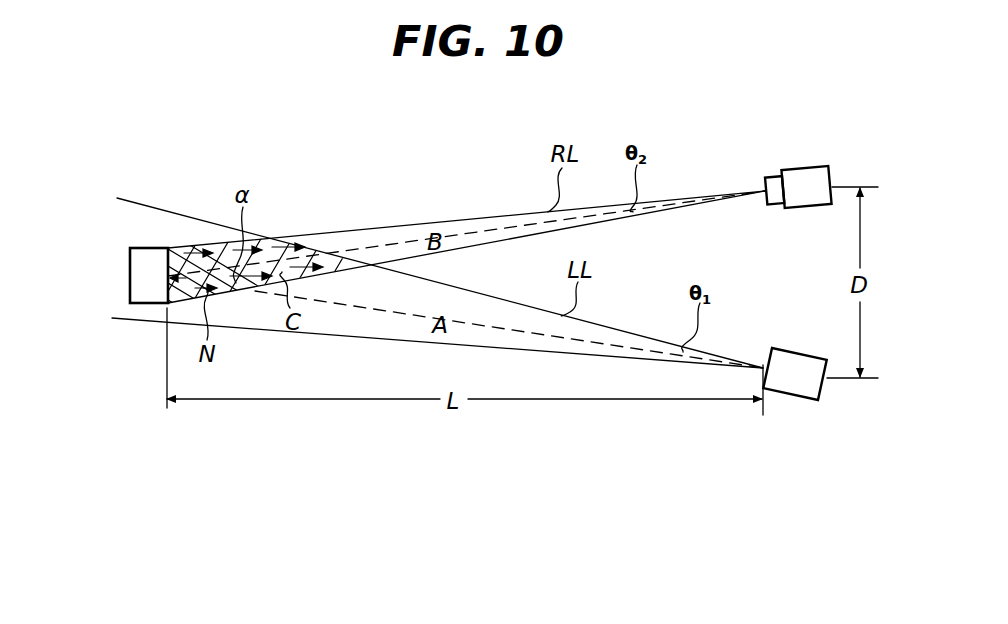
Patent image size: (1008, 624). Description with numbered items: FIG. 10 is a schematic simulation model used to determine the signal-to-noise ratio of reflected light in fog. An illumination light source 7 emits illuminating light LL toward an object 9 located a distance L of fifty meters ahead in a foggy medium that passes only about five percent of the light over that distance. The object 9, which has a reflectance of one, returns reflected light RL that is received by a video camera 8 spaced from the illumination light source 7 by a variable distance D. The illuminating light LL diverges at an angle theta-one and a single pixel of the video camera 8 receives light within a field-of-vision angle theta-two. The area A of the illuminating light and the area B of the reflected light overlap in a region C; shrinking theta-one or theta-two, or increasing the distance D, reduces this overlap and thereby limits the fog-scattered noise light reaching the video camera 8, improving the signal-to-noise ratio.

The illumination light source 7 is at (800, 400).
The video camera 8 is at (805, 167).
The object 9 is at (140, 273).